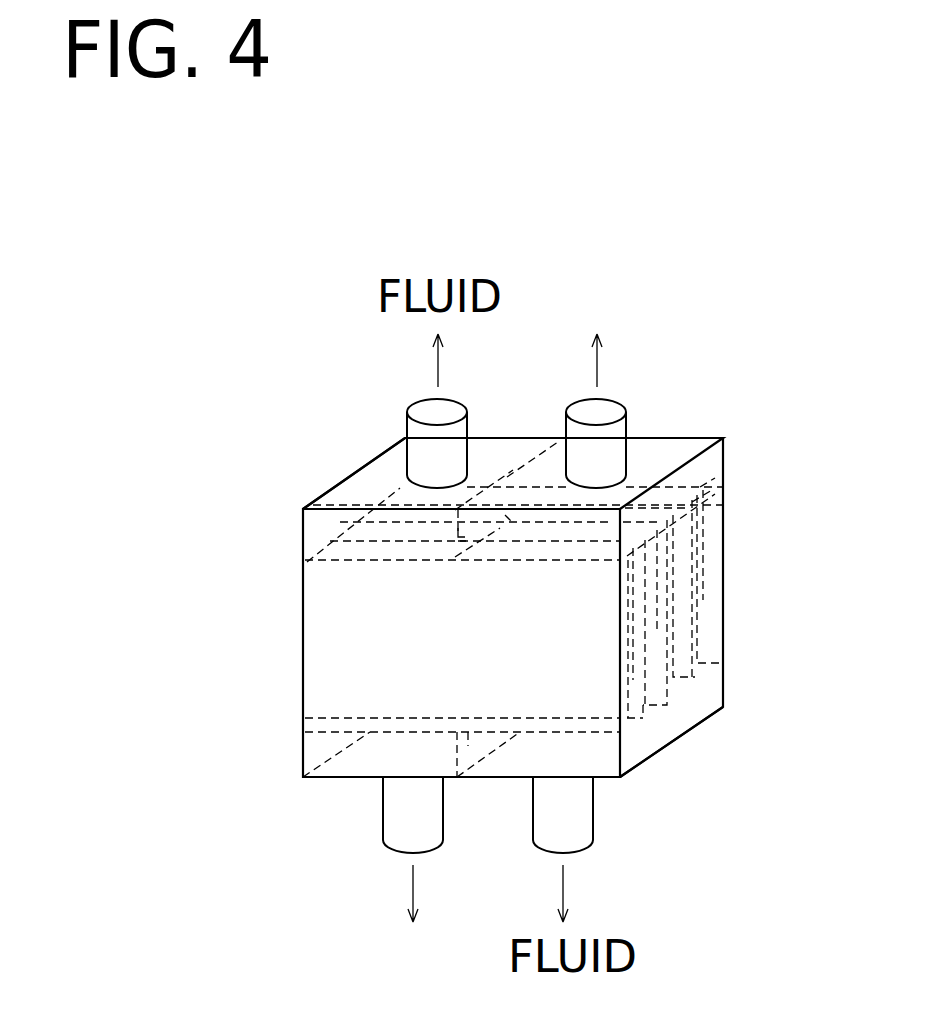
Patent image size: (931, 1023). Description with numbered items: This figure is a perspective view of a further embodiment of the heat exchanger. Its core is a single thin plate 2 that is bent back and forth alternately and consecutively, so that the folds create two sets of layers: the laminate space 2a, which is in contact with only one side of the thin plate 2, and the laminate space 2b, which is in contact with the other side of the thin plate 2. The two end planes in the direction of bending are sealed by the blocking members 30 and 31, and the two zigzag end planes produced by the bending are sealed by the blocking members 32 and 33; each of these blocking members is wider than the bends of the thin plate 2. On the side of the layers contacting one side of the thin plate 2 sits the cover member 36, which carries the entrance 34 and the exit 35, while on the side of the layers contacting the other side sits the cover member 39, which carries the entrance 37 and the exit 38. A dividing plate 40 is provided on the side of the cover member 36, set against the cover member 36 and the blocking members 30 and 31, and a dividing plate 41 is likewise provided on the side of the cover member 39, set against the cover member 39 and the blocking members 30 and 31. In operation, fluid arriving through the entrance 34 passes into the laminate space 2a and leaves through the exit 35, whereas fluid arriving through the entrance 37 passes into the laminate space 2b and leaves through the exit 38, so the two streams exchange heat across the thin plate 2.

The thin plate 2 is at (705, 485).
The laminate space 2a is at (723, 542).
The laminate space 2b is at (707, 633).
The blocking member 30 is at (303, 527).
The blocking member 31 is at (688, 438).
The blocking member 32 is at (360, 468).
The blocking member 33 is at (697, 710).
The entrance 34 is at (425, 411).
The exit 35 is at (610, 410).
The cover member 36 is at (503, 440).
The entrance 37 is at (580, 825).
The exit 38 is at (410, 820).
The cover member 39 is at (500, 780).
The dividing plate 40 is at (500, 498).
The dividing plate 41 is at (465, 720).